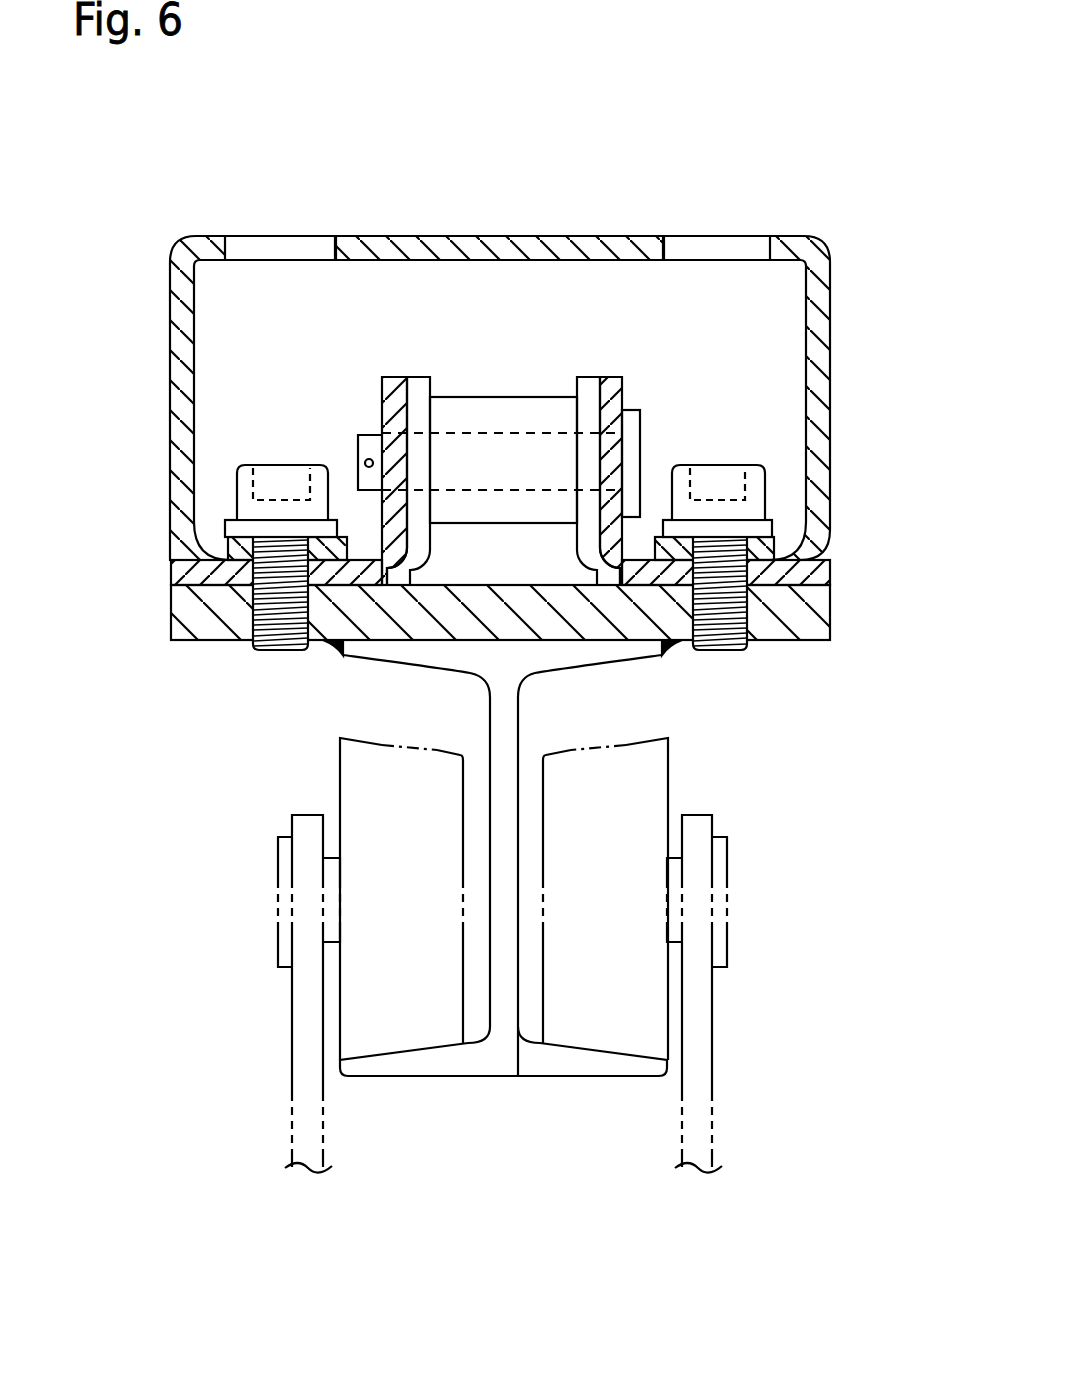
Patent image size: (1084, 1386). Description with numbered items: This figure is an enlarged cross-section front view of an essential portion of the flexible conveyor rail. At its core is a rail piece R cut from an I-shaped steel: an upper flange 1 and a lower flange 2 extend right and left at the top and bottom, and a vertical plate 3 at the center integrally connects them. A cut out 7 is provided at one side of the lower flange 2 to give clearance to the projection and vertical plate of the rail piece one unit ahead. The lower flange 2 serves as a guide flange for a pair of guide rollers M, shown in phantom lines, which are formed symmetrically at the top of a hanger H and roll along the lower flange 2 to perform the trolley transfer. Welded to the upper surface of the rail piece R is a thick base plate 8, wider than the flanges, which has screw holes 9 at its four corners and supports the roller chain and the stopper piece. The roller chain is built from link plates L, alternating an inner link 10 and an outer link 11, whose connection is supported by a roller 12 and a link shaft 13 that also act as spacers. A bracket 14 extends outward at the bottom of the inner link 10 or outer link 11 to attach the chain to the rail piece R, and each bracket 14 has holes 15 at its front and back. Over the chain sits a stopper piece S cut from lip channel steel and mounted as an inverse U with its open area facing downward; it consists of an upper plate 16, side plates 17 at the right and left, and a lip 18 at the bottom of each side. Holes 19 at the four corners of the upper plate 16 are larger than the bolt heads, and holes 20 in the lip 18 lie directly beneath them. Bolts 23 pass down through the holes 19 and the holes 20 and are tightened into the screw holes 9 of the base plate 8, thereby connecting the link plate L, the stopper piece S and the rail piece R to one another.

The upper flange 1 is at (413, 652).
The lower flange 2 is at (430, 1062).
The vertical plate 3 is at (520, 873).
The cut out 7 is at (562, 1062).
The base plate 8 is at (820, 622).
The screw holes 9 is at (250, 620).
The inner link 10 is at (417, 387).
The outer link 11 is at (390, 402).
The roller 12 is at (545, 413).
The link shaft 13 is at (358, 452).
The bracket 14 is at (172, 563).
The holes 15 is at (803, 570).
The upper plate 16 is at (440, 237).
The side plates 17 is at (178, 315).
The lip 18 is at (762, 553).
The holes 19 is at (288, 245).
The holes 20 is at (192, 562).
The bolts 23 is at (247, 497).
The link plate L is at (430, 370).
The stopper piece S is at (797, 235).
The rail piece R is at (510, 708).
The guide roller M is at (590, 937).
The hanger H is at (305, 1105).